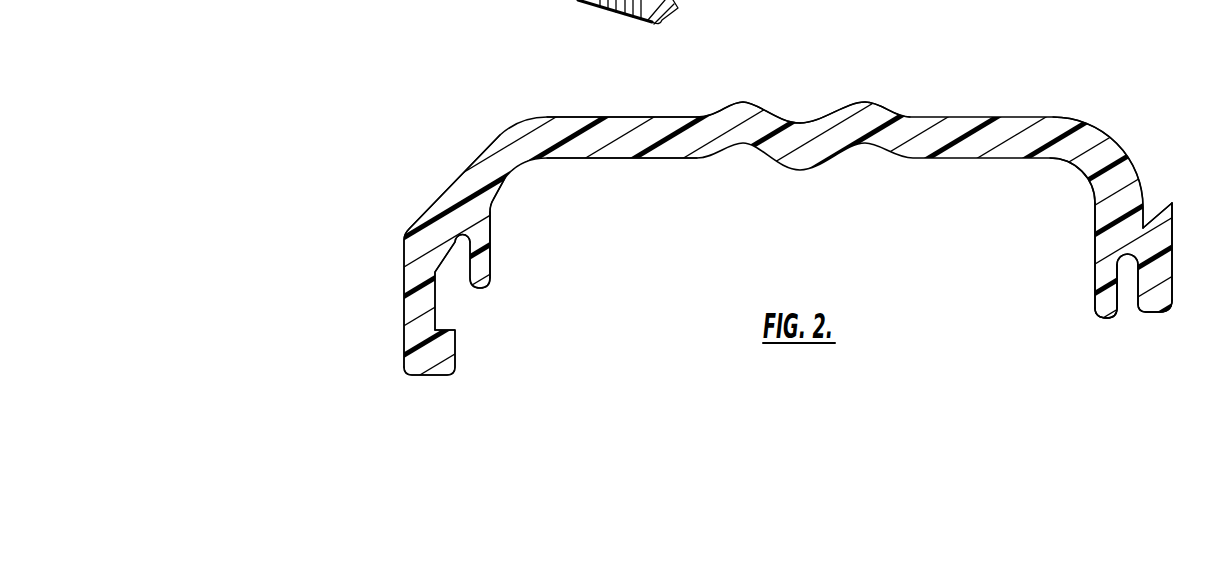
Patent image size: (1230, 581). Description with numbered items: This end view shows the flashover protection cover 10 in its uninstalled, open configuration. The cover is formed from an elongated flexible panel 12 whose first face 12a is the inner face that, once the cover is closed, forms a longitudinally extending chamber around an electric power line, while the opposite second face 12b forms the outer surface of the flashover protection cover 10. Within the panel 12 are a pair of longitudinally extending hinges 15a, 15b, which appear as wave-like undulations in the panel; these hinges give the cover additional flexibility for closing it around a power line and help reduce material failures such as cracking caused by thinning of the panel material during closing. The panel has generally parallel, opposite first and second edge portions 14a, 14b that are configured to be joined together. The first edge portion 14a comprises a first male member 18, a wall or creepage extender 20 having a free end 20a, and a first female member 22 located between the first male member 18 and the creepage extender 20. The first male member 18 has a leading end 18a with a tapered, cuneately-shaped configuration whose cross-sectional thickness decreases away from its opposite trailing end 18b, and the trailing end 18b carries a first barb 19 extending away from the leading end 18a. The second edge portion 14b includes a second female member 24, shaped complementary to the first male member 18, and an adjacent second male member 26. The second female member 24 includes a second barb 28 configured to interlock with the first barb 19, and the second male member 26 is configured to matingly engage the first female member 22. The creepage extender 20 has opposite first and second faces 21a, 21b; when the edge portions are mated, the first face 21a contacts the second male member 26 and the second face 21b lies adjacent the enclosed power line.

The flashover protection cover 10 is at (1072, 52).
The elongated flexible panel 12 is at (1095, 145).
The first face 12a is at (608, 158).
The second face 12b is at (647, 116).
The first edge portion 14a is at (1123, 203).
The second edge portion 14b is at (432, 233).
The hinge 15a is at (753, 110).
The hinge 15b is at (868, 110).
The first male member 18 is at (1162, 262).
The leading end 18a is at (1152, 300).
The trailing end 18b is at (1162, 233).
The first barb 19 is at (1168, 208).
The creepage extender 20 is at (1107, 262).
The free end 20a is at (1100, 318).
The creepage extender first face 21a is at (1119, 266).
The creepage extender second face 21b is at (1093, 290).
The first female member 22 is at (1128, 308).
The second female member 24 is at (455, 282).
The second male member 26 is at (478, 267).
The second barb 28 is at (443, 350).